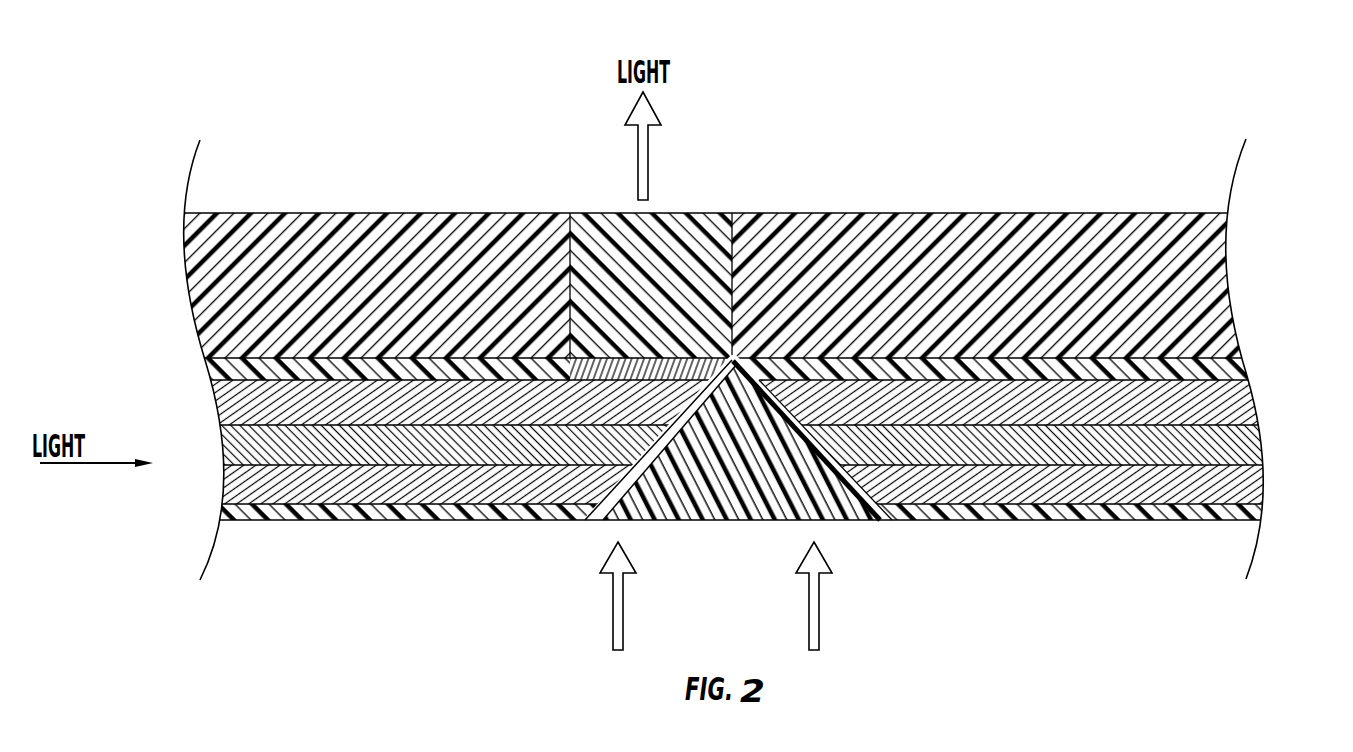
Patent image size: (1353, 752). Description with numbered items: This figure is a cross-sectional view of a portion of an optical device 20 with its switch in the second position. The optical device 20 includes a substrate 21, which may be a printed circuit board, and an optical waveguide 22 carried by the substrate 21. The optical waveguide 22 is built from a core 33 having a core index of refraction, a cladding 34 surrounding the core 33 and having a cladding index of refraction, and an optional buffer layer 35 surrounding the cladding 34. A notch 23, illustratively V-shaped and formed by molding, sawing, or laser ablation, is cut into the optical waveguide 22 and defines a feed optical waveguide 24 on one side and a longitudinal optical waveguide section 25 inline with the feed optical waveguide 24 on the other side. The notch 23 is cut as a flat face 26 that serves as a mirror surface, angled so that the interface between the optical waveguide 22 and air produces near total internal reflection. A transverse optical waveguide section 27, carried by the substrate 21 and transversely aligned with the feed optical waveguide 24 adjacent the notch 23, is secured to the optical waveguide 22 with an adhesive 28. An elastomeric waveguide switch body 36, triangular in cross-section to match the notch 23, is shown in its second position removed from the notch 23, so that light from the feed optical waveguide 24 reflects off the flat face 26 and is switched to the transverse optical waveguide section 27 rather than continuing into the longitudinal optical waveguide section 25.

The optical device 20 is at (535, 147).
The substrate 21 is at (360, 236).
The optical waveguide 22 is at (198, 430).
The notch 23 is at (584, 514).
The feed optical waveguide 24 is at (340, 522).
The longitudinal optical waveguide section 25 is at (1016, 521).
The flat face 26 is at (603, 514).
The transverse optical waveguide section 27 is at (688, 213).
The adhesive 28 is at (733, 360).
The core 33 is at (1243, 444).
The cladding 34 is at (1243, 405).
The buffer layer 35 is at (1238, 369).
The elastomeric waveguide switch body 36 is at (755, 508).